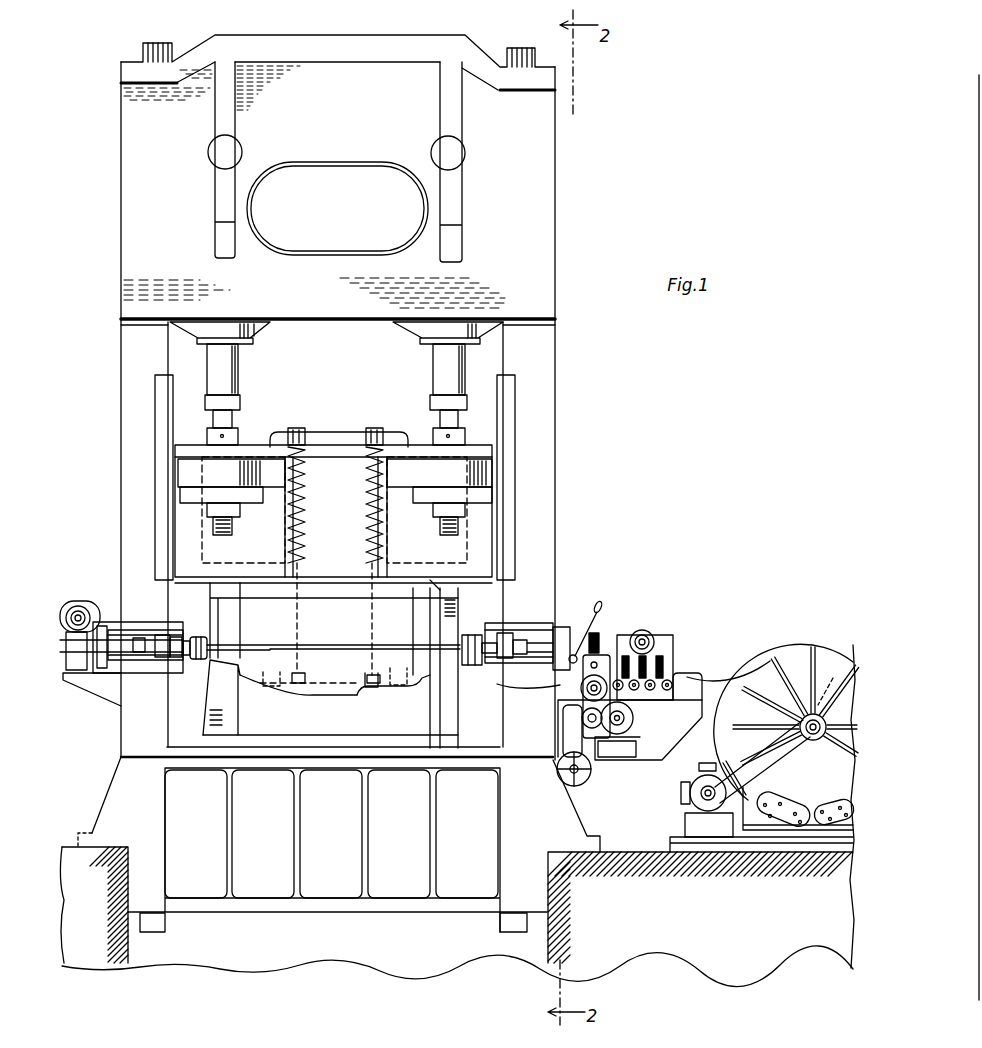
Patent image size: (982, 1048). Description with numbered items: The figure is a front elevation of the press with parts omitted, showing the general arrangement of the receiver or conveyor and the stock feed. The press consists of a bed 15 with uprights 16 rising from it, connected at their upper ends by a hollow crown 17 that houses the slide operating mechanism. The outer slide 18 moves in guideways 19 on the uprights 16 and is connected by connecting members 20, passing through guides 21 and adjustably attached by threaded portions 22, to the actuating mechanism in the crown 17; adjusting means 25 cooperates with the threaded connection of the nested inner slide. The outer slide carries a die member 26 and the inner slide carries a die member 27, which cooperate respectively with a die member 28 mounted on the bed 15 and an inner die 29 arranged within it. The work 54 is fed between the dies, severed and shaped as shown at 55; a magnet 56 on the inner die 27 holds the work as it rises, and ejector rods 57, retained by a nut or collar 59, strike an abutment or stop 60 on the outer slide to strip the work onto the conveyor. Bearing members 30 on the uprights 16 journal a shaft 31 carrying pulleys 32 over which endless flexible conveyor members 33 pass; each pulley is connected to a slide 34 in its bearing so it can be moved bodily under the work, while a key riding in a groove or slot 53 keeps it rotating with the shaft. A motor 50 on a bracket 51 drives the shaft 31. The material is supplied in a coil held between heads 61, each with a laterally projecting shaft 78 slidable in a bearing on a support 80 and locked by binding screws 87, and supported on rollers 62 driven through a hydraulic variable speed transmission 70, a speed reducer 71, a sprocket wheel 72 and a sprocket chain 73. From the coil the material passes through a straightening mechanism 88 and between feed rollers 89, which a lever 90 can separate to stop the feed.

The bed 15 is at (200, 765).
The uprights 16 is at (121, 450).
The crown 17 is at (543, 193).
The outer slide 18 is at (250, 432).
The guideways 19 is at (162, 378).
The connecting members 20 is at (238, 373).
The guides 21 is at (265, 334).
The threaded portions 22 is at (213, 419).
The adjusting means 25 is at (213, 568).
The die member 26 is at (442, 592).
The die member 27 is at (418, 595).
The die member 28 is at (228, 683).
The inner die 29 is at (334, 665).
The bearing members 30 is at (520, 633).
The shaft 31 is at (285, 643).
The pulleys 32 is at (197, 637).
The endless flexible conveyor members 33 is at (197, 637).
The slide 34 is at (112, 626).
The motor 50 is at (76, 601).
The bracket 51 is at (90, 700).
The groove or slot 53 is at (250, 645).
The work 54 is at (497, 678).
The shaped work 55 is at (366, 689).
The magnet 56 is at (268, 668).
The ejector rods 57 is at (365, 595).
The nut or collar 59 is at (312, 432).
The abutment or stop 60 is at (297, 428).
The holders or heads 61 is at (815, 648).
The rollers 62 is at (101, 626).
The hydraulic variable speed transmission 70 is at (707, 773).
The speed reducer 71 is at (700, 795).
The sprocket wheel 72 is at (702, 803).
The sprocket chain 73 is at (716, 815).
The shaft 78 is at (810, 740).
The support 80 is at (776, 769).
The binding screws 87 is at (833, 682).
The straightening mechanism 88 is at (660, 645).
The feed rollers 89 is at (598, 683).
The lever 90 is at (595, 610).